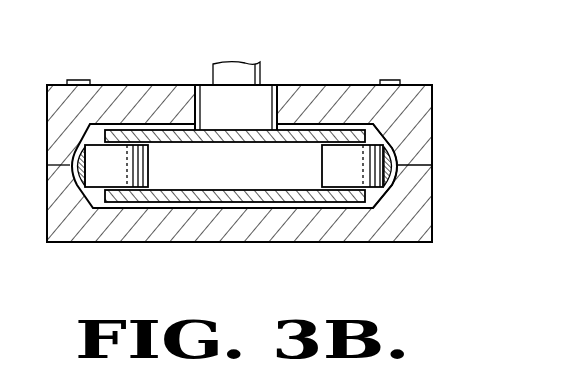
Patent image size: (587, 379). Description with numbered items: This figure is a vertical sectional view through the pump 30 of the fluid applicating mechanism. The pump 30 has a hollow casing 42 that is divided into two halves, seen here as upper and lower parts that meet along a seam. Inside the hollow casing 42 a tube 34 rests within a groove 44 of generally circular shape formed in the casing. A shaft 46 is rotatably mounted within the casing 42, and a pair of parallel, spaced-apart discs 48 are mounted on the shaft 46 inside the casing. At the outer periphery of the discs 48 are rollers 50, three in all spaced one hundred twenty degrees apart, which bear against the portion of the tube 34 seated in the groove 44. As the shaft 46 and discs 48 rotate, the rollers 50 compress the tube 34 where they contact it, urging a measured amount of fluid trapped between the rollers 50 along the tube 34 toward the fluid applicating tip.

The pump 30 is at (217, 160).
The hollow casing 42 is at (55, 130).
The tube 34 is at (78, 166).
The groove 44 is at (395, 147).
The shaft 46 is at (261, 84).
The discs 48 is at (155, 130).
The rollers 50 is at (149, 165).